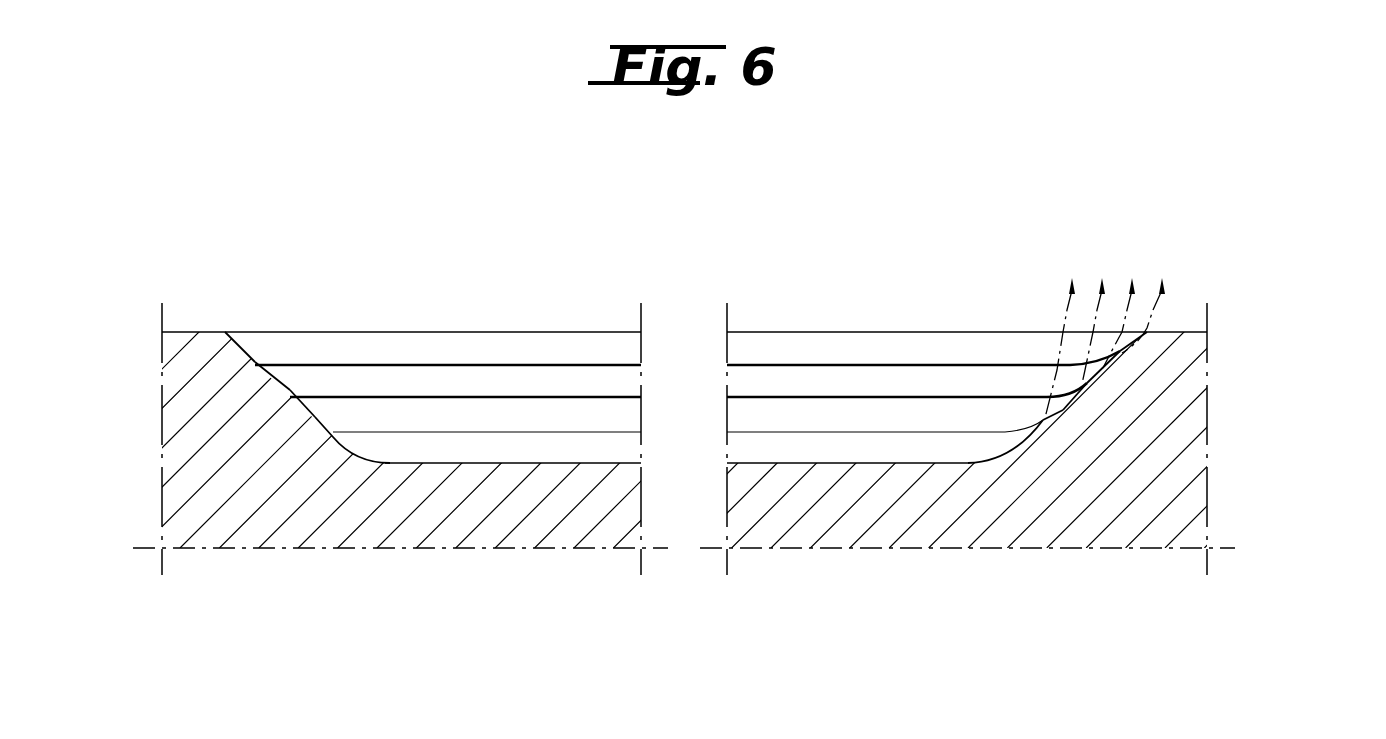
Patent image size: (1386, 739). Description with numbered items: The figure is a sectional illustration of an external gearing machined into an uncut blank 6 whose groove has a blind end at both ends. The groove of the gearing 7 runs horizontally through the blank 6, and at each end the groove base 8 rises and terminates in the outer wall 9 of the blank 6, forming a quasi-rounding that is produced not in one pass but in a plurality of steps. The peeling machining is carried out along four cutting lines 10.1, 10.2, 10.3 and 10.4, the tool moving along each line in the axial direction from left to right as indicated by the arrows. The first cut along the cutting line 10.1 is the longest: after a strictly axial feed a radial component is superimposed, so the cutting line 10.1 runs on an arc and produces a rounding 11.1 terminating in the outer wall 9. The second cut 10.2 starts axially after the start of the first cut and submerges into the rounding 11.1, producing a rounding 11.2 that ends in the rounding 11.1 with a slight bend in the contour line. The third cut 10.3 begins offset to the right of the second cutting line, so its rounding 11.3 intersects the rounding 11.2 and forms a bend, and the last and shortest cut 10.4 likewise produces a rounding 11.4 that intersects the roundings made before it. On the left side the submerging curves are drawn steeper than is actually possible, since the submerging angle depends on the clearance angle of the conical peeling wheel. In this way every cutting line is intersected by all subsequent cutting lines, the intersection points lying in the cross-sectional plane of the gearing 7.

The blank 6 is at (1163, 364).
The gearing 7 is at (565, 350).
The groove base 8 is at (863, 464).
The outer wall 9 is at (795, 330).
The first cutting line 10.1 is at (252, 352).
The second cutting line 10.2 is at (282, 385).
The third cutting line 10.3 is at (318, 413).
The fourth cutting line 10.4 is at (330, 432).
The first rounding 11.1 is at (260, 360).
The second rounding 11.2 is at (272, 377).
The third rounding 11.3 is at (313, 415).
The fourth rounding 11.4 is at (345, 445).